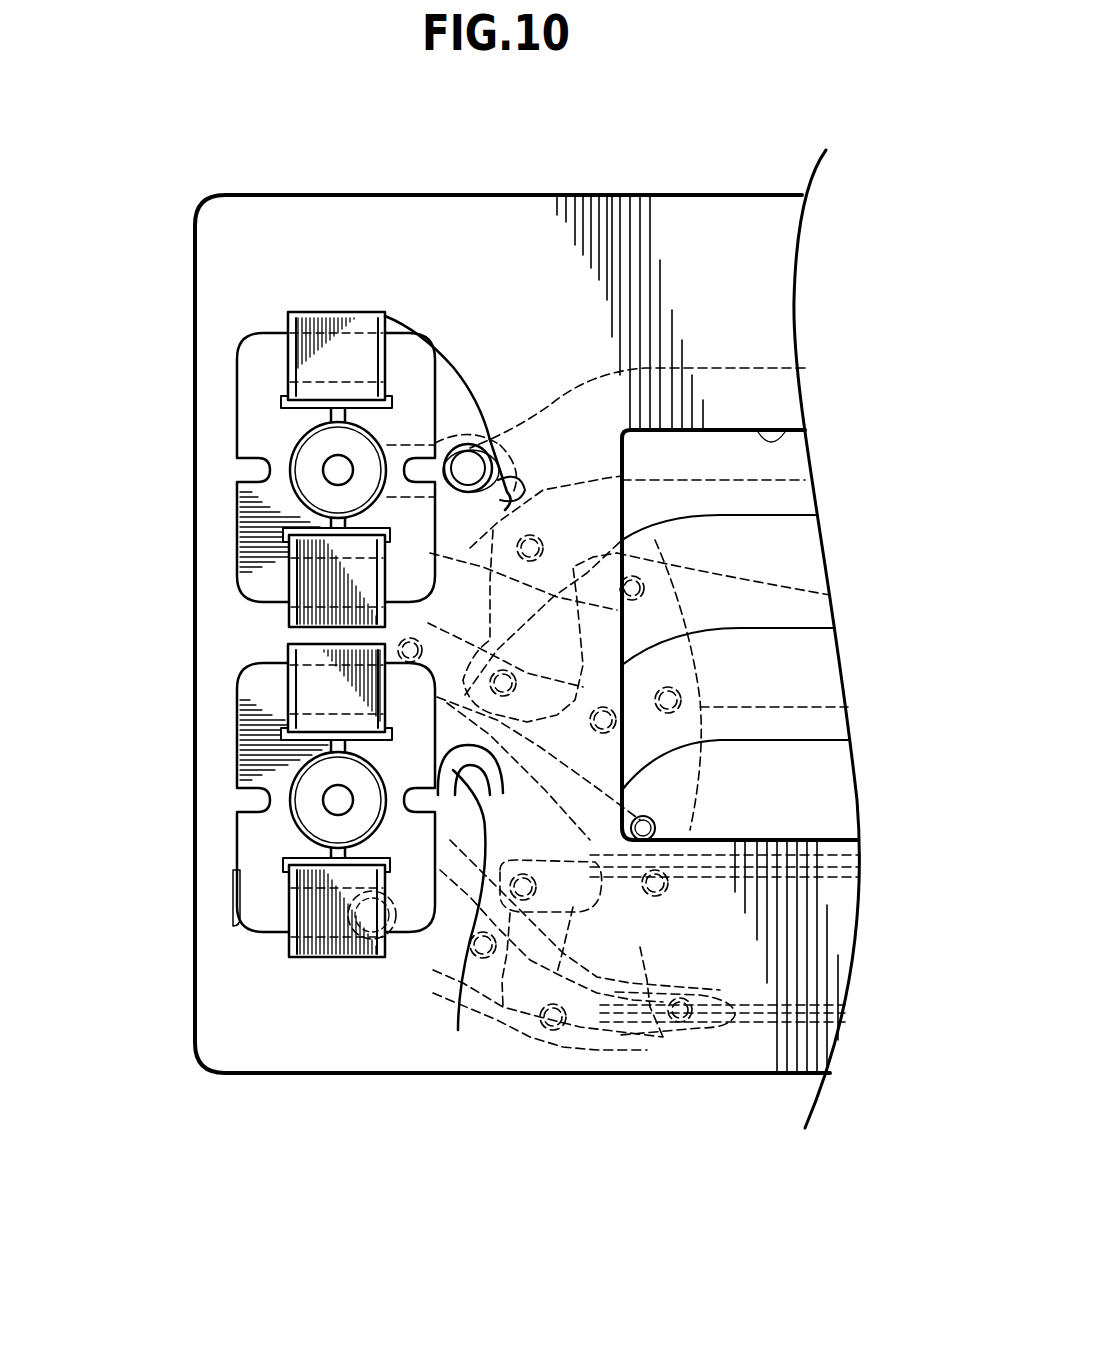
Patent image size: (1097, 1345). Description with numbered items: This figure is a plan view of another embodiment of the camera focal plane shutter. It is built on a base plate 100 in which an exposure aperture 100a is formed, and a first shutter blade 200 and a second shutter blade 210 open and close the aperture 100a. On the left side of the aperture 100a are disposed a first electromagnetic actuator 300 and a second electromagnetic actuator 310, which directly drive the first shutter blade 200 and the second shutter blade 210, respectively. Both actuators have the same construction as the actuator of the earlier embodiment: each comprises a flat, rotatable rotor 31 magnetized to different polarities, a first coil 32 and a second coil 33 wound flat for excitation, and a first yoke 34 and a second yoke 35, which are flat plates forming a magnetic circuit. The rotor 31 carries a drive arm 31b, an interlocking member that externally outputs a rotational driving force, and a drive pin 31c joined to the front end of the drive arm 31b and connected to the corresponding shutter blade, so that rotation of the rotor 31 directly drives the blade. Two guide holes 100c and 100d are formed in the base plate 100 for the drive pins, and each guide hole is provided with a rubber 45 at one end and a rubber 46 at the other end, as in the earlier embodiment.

The base plate 100 is at (663, 195).
The exposure aperture 100a is at (760, 432).
The guide hole 100c is at (463, 387).
The guide hole 100d is at (465, 919).
The first shutter blade 200 is at (738, 364).
The second shutter blade 210 is at (740, 1018).
The first electromagnetic actuator 300 is at (240, 353).
The second electromagnetic actuator 310 is at (240, 691).
The rotor 31 is at (298, 452).
The drive arm 31b is at (400, 437).
The drive pin 31c is at (487, 437).
The first coil 32 is at (318, 312).
The second coil 33 is at (285, 592).
The first yoke 34 is at (262, 350).
The second yoke 35 is at (403, 353).
The rubber 45 is at (545, 474).
The rubber 46 is at (477, 762).